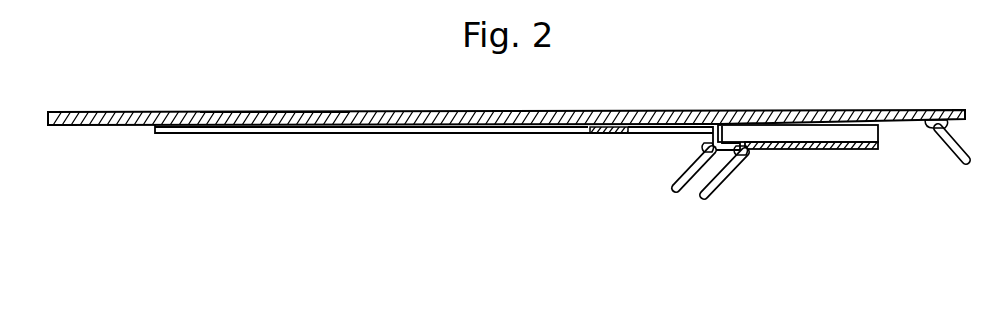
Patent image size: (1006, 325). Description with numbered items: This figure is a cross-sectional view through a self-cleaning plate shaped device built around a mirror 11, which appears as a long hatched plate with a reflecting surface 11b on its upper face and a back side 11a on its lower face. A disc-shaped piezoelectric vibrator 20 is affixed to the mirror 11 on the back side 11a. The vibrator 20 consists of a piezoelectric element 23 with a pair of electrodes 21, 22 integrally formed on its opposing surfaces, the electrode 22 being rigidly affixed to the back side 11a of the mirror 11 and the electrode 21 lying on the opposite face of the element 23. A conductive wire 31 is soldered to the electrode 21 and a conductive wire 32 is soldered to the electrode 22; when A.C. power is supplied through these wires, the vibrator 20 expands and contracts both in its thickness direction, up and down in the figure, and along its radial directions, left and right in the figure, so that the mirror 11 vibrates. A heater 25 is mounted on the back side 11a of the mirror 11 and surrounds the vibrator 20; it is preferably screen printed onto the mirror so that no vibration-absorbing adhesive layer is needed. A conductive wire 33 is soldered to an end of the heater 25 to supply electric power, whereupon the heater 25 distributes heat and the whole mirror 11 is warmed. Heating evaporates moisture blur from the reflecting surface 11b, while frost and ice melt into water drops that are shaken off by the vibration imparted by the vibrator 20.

The mirror 11 is at (966, 109).
The back side of the mirror 11a is at (99, 126).
The reflecting surface 11b is at (280, 111).
The heater 25 is at (359, 133).
The electrode 22 is at (712, 142).
The piezoelectric vibrator 20 is at (868, 125).
The piezoelectric element 23 is at (800, 137).
The electrode 21 is at (851, 150).
The conductive wire 31 is at (741, 178).
The conductive wire 32 is at (690, 172).
The conductive wire 33 is at (955, 162).